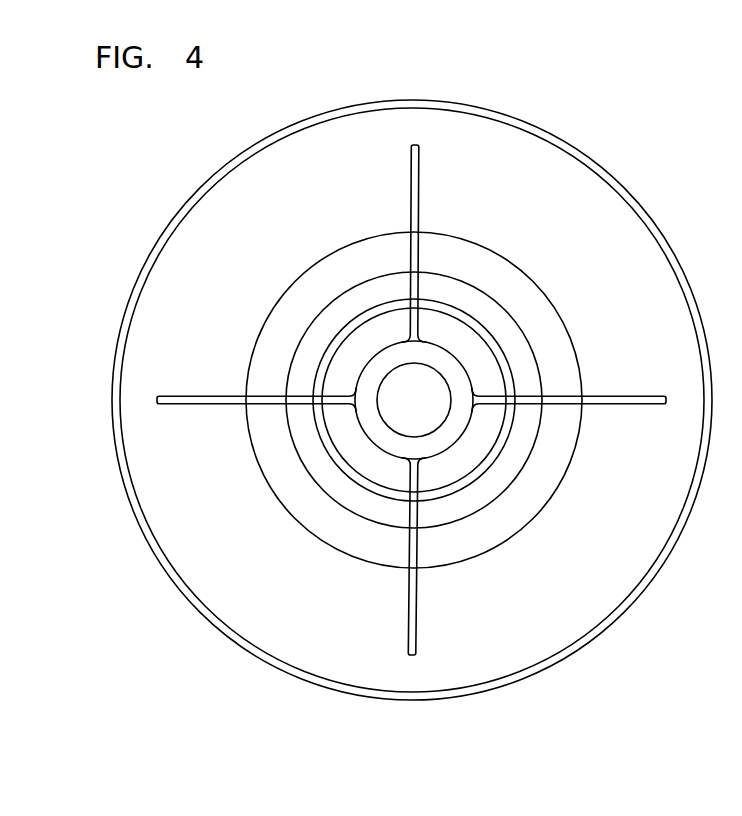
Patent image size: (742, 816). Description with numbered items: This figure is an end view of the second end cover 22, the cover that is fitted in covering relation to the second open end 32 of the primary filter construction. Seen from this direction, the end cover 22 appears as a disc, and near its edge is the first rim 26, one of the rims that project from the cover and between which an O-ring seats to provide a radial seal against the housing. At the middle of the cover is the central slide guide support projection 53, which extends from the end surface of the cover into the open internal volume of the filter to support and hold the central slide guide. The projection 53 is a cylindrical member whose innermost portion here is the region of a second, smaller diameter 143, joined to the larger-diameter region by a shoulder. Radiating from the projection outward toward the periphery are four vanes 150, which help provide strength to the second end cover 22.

The second end cover 22 is at (166, 168).
The first rim 26 is at (513, 682).
The second open end 32 is at (517, 515).
The central slide guide support projection 53 is at (433, 458).
The region of a second, smaller diameter 143 is at (435, 428).
The vanes 150 is at (415, 198).